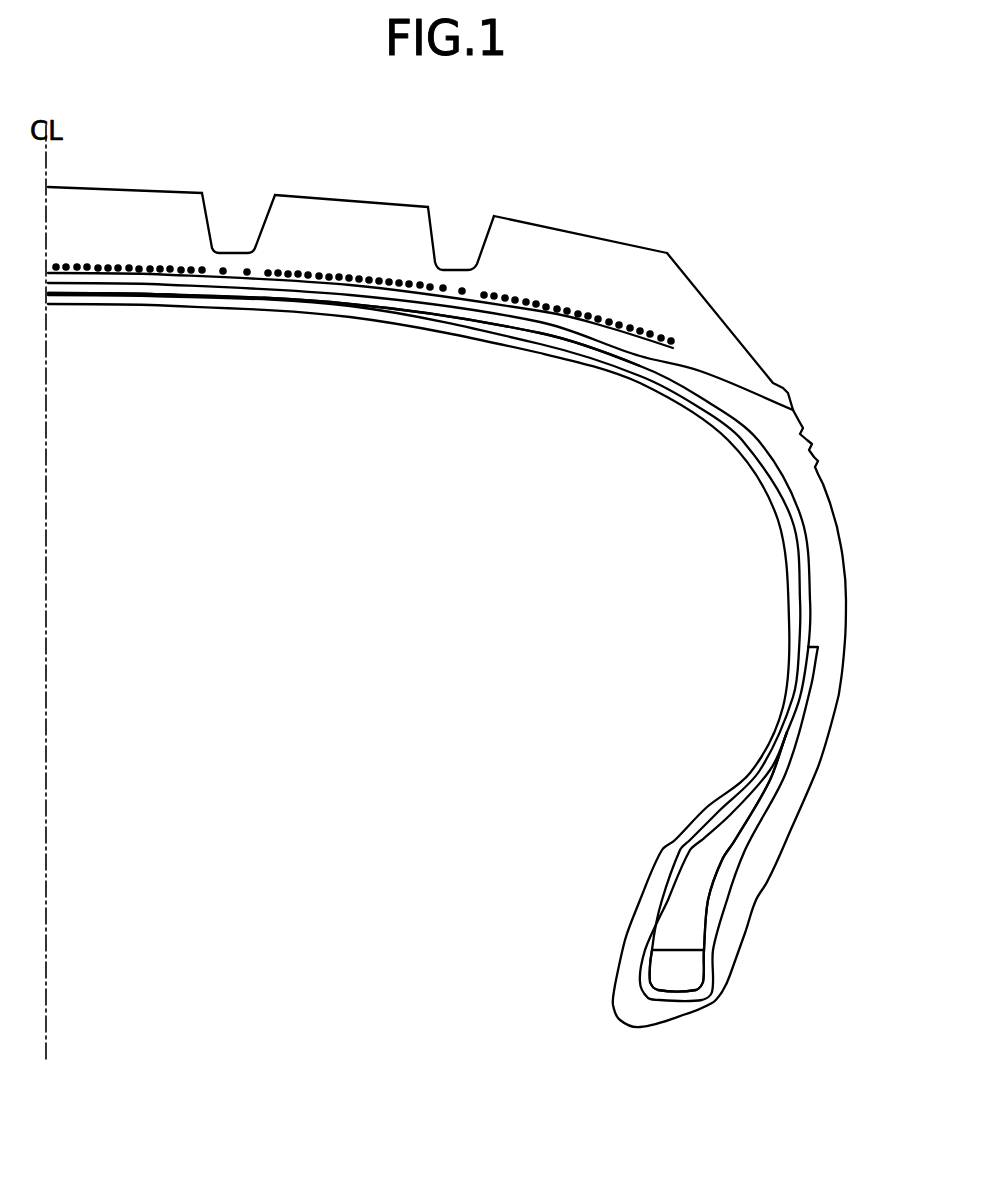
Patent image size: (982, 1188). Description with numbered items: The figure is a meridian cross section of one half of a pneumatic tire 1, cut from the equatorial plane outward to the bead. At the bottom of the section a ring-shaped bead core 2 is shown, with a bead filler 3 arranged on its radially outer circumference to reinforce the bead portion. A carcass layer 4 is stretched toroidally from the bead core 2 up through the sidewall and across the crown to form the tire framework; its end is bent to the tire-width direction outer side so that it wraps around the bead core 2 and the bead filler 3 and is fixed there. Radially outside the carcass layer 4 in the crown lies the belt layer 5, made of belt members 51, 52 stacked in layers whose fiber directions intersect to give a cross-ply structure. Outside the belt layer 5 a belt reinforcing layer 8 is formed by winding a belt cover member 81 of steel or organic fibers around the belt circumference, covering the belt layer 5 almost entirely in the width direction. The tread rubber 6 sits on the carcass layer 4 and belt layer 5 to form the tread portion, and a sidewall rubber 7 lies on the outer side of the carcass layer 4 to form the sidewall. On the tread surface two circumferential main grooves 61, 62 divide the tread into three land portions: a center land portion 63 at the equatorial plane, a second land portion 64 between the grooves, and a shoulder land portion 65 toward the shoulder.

The pneumatic tire 1 is at (697, 196).
The bead core 2 is at (688, 972).
The bead filler 3 is at (705, 893).
The carcass layer 4 is at (803, 565).
The belt layer 5 is at (600, 407).
The belt member 51 is at (590, 330).
The belt member 52 is at (572, 318).
The tread rubber 6 is at (698, 303).
The circumferential main groove 61 is at (238, 207).
The circumferential main groove 62 is at (463, 225).
The center land portion 63 is at (117, 203).
The second land portion 64 is at (358, 215).
The shoulder land portion 65 is at (525, 233).
The side wall rubber 7 is at (827, 520).
The belt reinforcing layer 8 is at (657, 182).
The belt cover member 81 is at (585, 303).